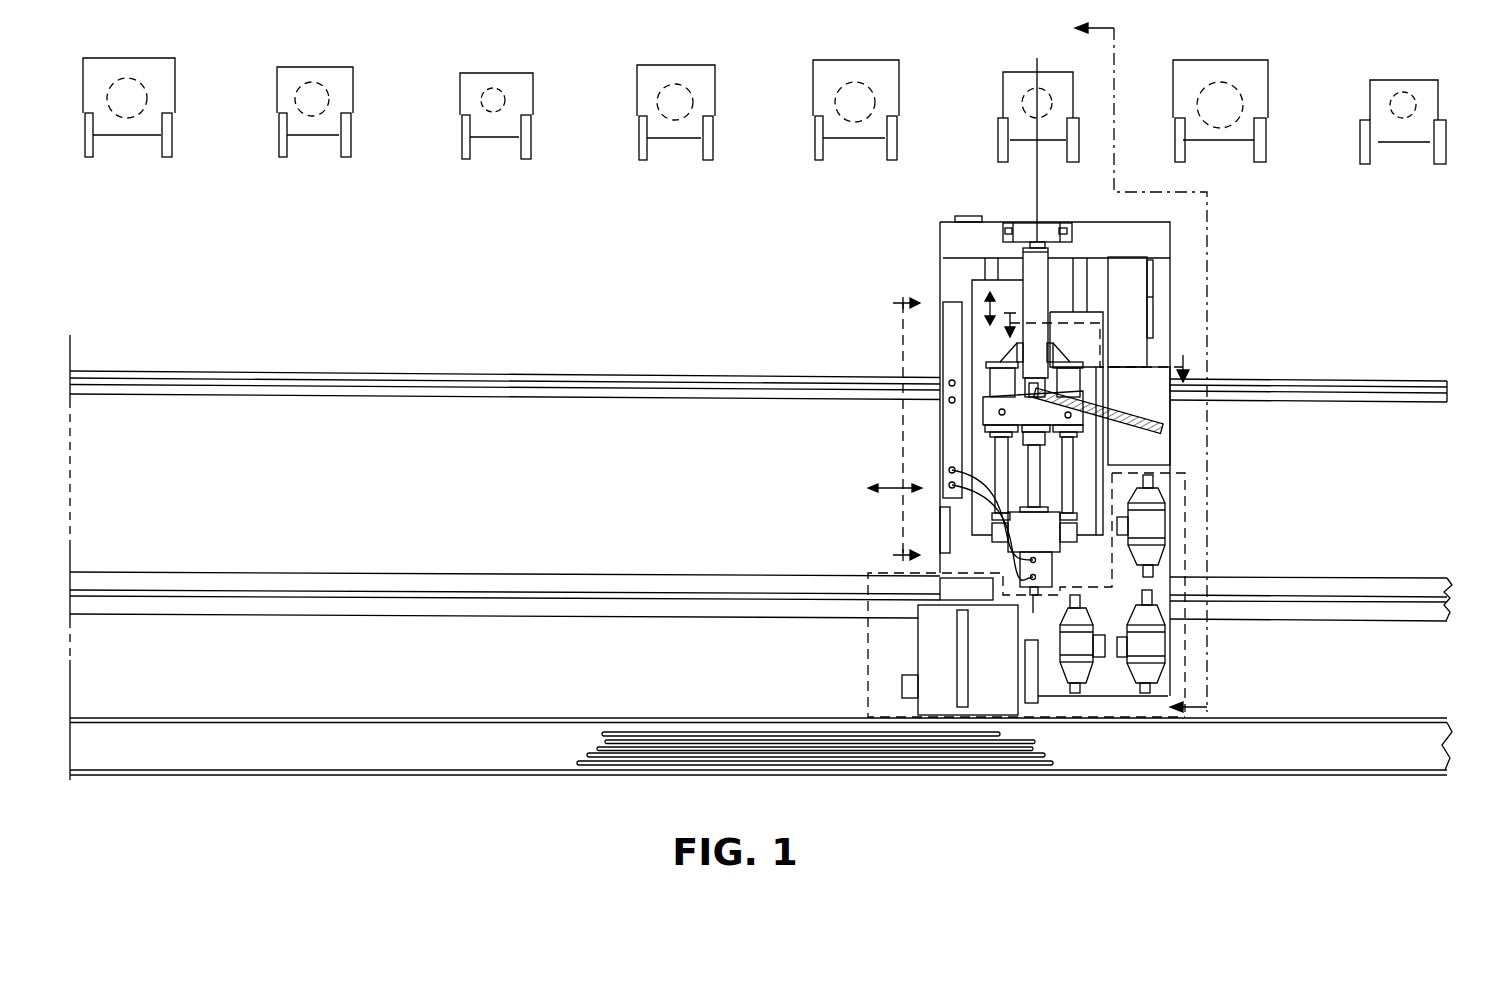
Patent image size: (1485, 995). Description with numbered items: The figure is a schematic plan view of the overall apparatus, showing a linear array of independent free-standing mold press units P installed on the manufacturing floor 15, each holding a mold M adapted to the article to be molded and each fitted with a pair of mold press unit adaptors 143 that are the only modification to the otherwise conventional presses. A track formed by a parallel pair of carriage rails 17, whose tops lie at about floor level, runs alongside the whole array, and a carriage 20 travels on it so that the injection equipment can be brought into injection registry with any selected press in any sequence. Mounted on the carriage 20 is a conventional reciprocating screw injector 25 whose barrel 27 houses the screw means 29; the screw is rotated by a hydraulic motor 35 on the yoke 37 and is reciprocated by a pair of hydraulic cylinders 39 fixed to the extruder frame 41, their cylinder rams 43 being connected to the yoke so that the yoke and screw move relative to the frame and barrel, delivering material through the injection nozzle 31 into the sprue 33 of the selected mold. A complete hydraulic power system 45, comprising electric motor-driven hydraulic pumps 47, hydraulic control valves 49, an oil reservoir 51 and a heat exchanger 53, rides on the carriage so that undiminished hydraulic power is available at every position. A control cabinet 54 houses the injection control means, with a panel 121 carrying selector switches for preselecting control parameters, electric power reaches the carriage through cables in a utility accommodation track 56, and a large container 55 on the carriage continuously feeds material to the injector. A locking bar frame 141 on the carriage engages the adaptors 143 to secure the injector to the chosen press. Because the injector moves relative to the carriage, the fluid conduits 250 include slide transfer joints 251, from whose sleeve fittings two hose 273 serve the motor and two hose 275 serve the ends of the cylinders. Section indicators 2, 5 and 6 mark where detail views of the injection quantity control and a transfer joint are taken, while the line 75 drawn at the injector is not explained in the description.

The section line 2- 2 is at (1157, 370).
The section line 5- 5 is at (1089, 334).
The section line 6- 6 is at (891, 431).
The manufacturing floor 15 is at (474, 333).
The carriage rails 17 is at (648, 380).
The carriage 20 is at (1163, 487).
The reciprocating screw injector 25 is at (975, 407).
The barrel 27 is at (1040, 272).
The screw means 29 is at (1000, 497).
The injection nozzle 31 is at (1040, 228).
The sprue 33 is at (315, 115).
The hydraulic motor 35 is at (1052, 565).
The yoke 37 is at (1022, 542).
The hydraulic cylinders 39 is at (1000, 385).
The extruder frame 41 is at (1007, 417).
The cylinder rams 43 is at (1000, 472).
The hydraulic power system 45 is at (1188, 523).
The electric motor-driven hydraulic pumps 47 is at (1153, 482).
The hydraulic control valves 49 is at (963, 588).
The oil reservoir 51 is at (978, 649).
The heat exchanger 53 is at (959, 658).
The control cabinet 54 is at (1138, 310).
The large container 55 is at (1124, 400).
The utility accommodation track 56 is at (662, 750).
The center line 75 is at (1025, 190).
The panel 121 is at (1153, 278).
The locking bar frame 141 is at (1003, 240).
The mold press unit adaptors 143 is at (168, 145).
The fluid conduits 250 is at (948, 384).
The slide transfer joints 251 is at (935, 331).
The hose 273 is at (1005, 520).
The hose 275 is at (949, 400).
The mold press units P is at (160, 60).
The mold M is at (147, 98).